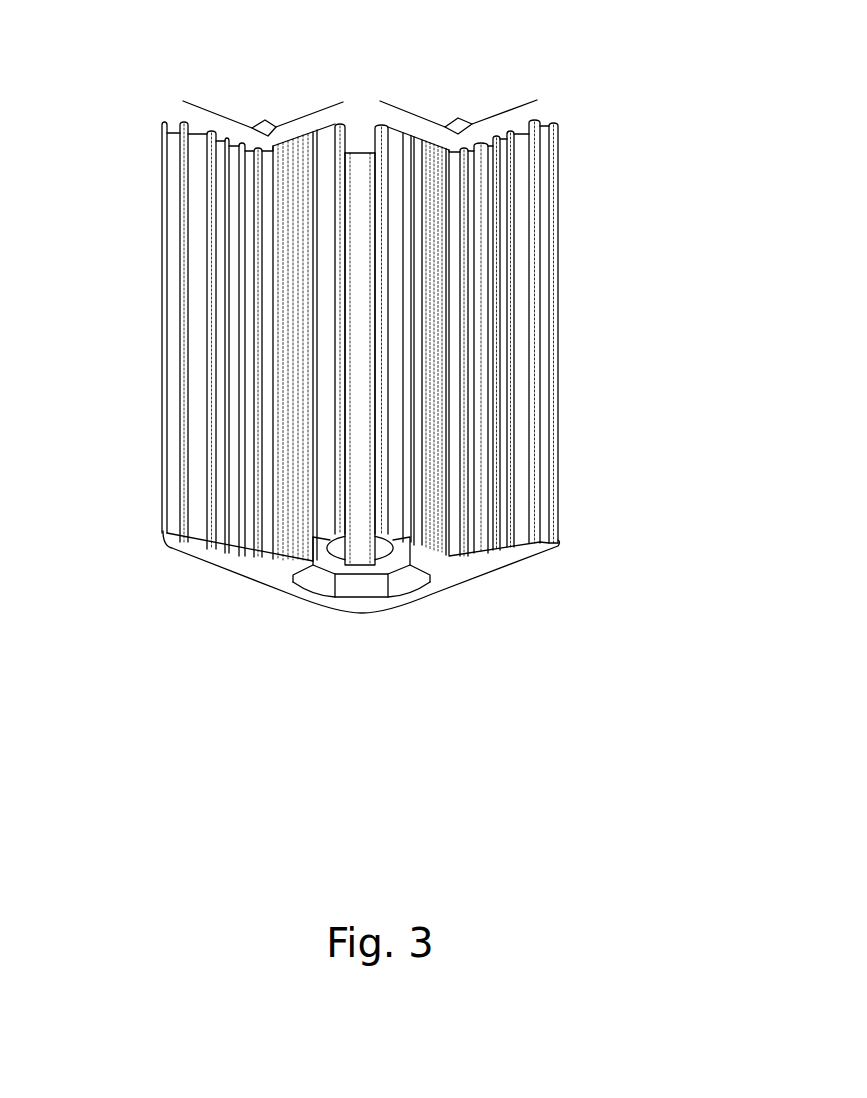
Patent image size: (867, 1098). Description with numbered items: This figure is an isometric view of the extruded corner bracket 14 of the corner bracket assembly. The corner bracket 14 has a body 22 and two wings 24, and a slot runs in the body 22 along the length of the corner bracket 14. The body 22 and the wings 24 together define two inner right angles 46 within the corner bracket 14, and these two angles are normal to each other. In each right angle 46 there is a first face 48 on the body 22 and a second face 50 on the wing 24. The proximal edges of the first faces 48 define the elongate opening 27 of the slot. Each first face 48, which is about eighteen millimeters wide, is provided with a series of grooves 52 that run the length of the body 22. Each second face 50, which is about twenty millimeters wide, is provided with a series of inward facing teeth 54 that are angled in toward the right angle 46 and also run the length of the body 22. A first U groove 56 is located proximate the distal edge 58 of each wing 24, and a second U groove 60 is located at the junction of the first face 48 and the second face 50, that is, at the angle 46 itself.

The corner bracket 14 is at (412, 359).
The body 22 is at (467, 572).
The wings 24 is at (214, 555).
The elongate opening 27 is at (361, 132).
The inner right angles 46 is at (266, 121).
The first face 48 is at (300, 518).
The second face 50 is at (247, 538).
The grooves 52 is at (428, 190).
The inward facing teeth 54 is at (497, 440).
The first U groove 56 is at (197, 137).
The distal edge 58 is at (173, 130).
The second U groove 60 is at (268, 150).